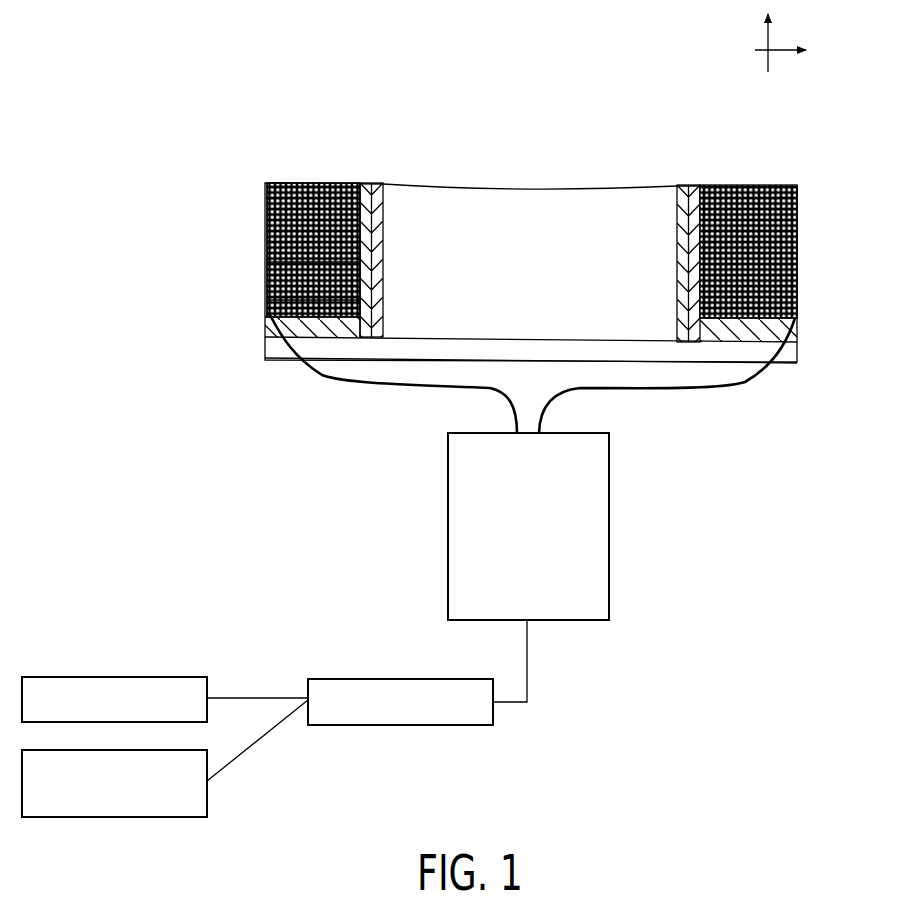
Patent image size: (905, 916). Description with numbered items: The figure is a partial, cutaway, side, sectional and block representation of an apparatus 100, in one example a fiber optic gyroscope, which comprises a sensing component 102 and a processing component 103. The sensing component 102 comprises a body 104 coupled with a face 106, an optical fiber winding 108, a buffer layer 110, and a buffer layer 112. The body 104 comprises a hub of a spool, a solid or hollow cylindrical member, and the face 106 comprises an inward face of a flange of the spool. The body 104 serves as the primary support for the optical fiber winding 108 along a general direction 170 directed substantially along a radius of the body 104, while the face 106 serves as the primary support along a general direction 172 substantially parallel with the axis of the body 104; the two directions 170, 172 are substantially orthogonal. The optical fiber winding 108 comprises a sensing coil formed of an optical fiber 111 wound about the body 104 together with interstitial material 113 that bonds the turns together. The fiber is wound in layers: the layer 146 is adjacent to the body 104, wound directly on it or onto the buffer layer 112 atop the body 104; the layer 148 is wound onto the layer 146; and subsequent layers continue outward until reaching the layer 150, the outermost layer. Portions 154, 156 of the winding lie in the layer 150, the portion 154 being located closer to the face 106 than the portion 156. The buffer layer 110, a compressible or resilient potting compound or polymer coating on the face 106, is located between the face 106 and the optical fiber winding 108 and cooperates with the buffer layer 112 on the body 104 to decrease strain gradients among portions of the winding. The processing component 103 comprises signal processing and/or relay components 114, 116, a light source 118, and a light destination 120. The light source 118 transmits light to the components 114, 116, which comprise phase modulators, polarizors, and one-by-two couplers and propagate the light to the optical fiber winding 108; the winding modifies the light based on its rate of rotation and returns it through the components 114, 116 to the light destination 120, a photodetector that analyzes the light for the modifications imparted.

The apparatus 100 is at (150, 104).
The sensing component 102 is at (213, 212).
The processing component 103 is at (323, 576).
The body 104 is at (677, 217).
The face 106 is at (767, 328).
The optical fiber winding 108 is at (261, 215).
The buffer layer 110 is at (298, 330).
The optical fiber 111 is at (797, 230).
The buffer layer 112 is at (695, 188).
The interstitial material 113 is at (797, 275).
The signal processing and/or relay component 114 is at (610, 523).
The signal processing and/or relay component 116 is at (398, 727).
The light source 118 is at (115, 676).
The light destination 120 is at (112, 818).
The layer 146 is at (358, 183).
The layer 148 is at (352, 183).
The layer 150 is at (268, 183).
The portion 154 is at (265, 300).
The portion 156 is at (265, 270).
The general direction 170 is at (780, 60).
The general direction 172 is at (770, 30).